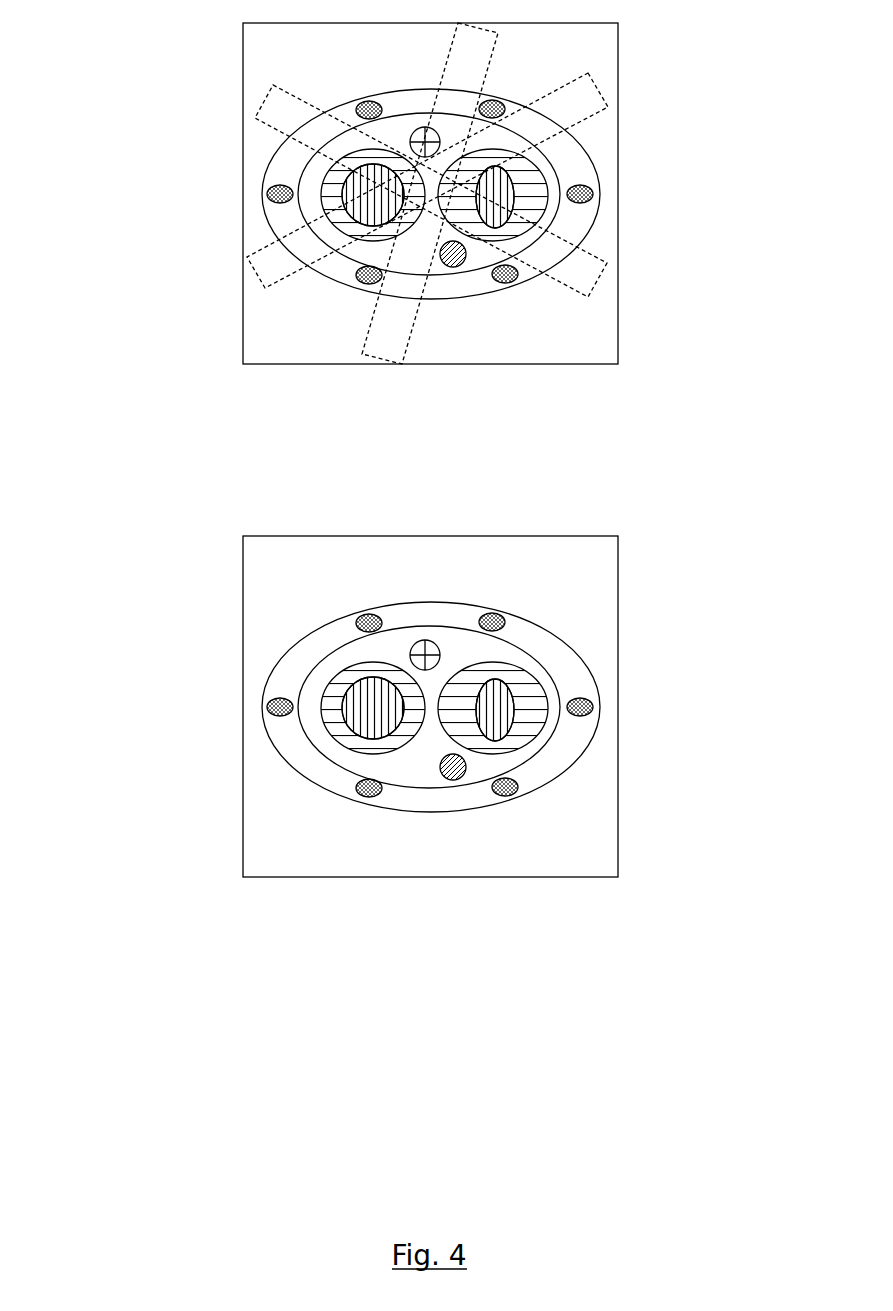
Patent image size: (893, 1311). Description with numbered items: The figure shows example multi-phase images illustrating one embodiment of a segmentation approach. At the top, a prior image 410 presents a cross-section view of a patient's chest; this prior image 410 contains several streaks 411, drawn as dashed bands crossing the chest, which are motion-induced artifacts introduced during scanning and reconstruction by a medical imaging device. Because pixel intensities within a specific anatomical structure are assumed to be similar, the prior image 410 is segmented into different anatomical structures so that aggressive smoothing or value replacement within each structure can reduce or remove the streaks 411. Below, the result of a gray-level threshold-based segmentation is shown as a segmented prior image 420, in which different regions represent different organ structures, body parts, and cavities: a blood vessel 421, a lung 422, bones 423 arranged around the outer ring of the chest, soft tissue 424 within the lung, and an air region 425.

The prior image 410 is at (430, 222).
The streaks 411 is at (368, 325).
The segmented prior image 420 is at (431, 709).
The blood vessel 421 is at (428, 640).
The lung 422 is at (540, 690).
The bones 423 is at (352, 783).
The soft tissue 424 is at (497, 713).
The air region 425 is at (437, 772).